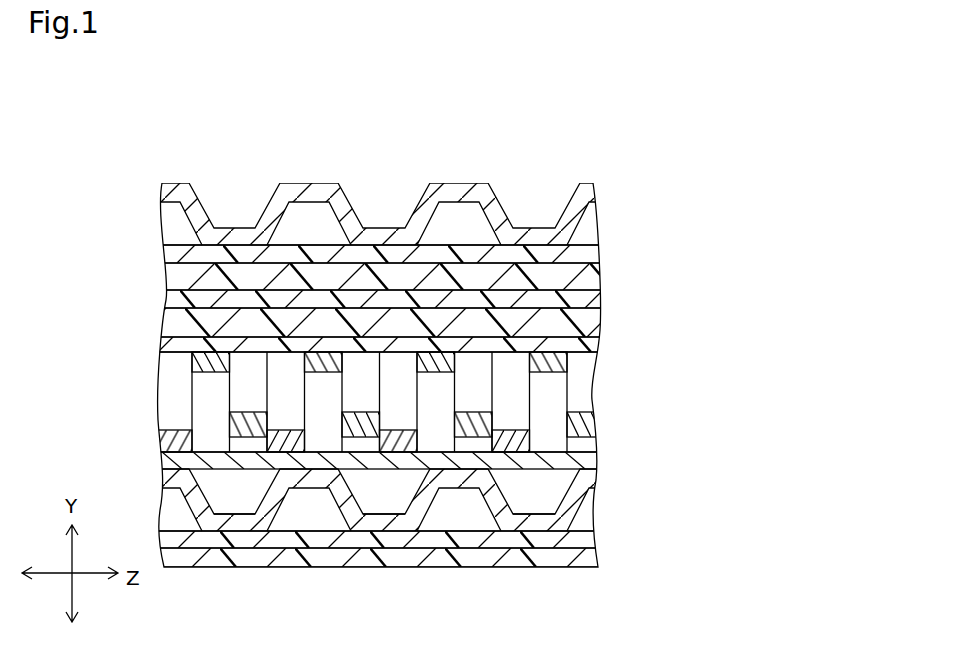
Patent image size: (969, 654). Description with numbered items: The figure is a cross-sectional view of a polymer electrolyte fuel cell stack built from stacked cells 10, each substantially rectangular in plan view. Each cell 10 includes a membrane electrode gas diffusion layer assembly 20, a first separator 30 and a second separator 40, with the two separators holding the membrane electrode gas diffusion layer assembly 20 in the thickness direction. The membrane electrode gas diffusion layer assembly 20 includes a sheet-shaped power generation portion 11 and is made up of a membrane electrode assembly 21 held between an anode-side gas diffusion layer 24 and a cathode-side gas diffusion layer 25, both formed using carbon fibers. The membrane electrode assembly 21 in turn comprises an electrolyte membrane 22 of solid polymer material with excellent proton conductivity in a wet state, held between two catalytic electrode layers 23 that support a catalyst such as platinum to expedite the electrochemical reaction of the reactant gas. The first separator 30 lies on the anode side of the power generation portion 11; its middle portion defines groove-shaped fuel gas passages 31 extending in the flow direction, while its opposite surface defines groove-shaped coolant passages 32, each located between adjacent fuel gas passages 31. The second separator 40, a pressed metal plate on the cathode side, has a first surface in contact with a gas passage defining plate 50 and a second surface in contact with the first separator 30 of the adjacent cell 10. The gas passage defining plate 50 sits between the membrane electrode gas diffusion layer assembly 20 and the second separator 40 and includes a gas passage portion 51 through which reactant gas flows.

The cell 10 is at (463, 379).
The power generation portion 11 is at (463, 379).
The membrane electrode gas diffusion layer assembly 20 is at (449, 400).
The membrane electrode assembly 21 is at (425, 415).
The electrolyte membrane 22 is at (599, 300).
The catalytic electrode layer 23 is at (598, 277).
The anode-side gas diffusion layer 24 is at (598, 257).
The cathode-side gas diffusion layer 25 is at (425, 351).
The first separator 30 is at (400, 379).
The fuel gas passage 31 is at (311, 221).
The coolant passage 32 is at (237, 493).
The second separator 40 is at (600, 466).
The gas passage defining plate 50 is at (412, 402).
The gas passage portion 51 is at (203, 398).